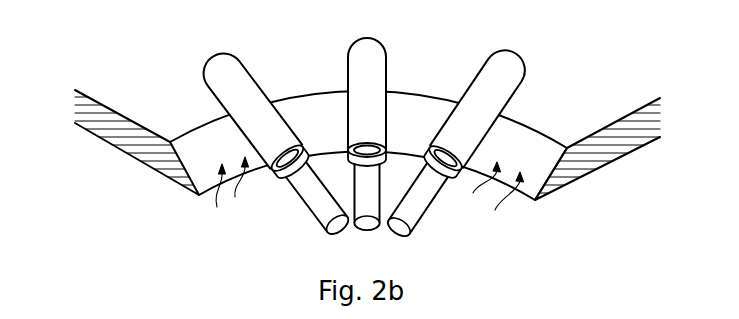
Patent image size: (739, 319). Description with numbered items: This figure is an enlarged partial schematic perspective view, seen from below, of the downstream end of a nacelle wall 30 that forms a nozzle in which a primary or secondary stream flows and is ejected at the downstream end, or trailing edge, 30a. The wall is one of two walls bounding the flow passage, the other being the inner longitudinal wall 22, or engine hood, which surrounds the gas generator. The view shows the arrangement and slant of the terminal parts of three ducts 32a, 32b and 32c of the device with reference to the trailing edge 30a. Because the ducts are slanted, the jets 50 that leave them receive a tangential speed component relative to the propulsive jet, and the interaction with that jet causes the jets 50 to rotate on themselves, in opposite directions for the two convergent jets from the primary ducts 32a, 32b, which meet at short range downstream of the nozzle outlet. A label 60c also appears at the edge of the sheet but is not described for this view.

The inner longitudinal wall 22 is at (224, 208).
The nacelle wall 30 is at (607, 117).
The downstream end 30a is at (557, 187).
The first primary duct 32a is at (240, 73).
The second primary duct 32b is at (519, 75).
The third duct 32c is at (379, 45).
The jets 50 is at (322, 220).
The element 60c is at (592, 309).